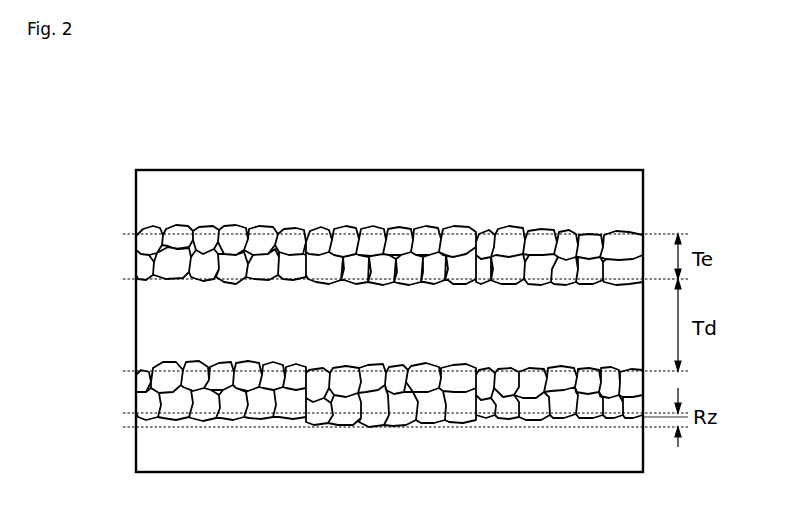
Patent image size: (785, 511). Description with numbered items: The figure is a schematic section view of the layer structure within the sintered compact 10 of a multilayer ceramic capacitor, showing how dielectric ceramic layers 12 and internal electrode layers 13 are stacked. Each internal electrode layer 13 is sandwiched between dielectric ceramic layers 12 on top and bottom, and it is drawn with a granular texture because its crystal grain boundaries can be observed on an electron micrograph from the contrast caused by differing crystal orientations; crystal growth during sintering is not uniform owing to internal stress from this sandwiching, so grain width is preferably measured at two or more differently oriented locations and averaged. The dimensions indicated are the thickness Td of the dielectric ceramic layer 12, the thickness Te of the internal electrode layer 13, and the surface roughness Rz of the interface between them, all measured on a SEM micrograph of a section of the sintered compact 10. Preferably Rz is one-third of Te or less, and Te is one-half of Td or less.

The sintered compact 10 is at (470, 146).
The dielectric ceramic layer 12 is at (157, 325).
The internal electrode layer 13 is at (148, 245).